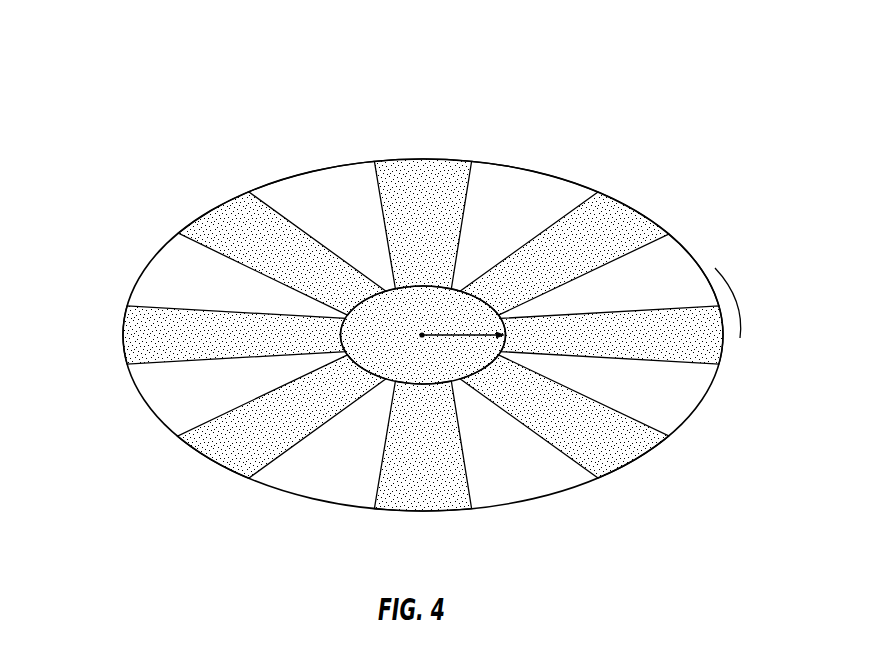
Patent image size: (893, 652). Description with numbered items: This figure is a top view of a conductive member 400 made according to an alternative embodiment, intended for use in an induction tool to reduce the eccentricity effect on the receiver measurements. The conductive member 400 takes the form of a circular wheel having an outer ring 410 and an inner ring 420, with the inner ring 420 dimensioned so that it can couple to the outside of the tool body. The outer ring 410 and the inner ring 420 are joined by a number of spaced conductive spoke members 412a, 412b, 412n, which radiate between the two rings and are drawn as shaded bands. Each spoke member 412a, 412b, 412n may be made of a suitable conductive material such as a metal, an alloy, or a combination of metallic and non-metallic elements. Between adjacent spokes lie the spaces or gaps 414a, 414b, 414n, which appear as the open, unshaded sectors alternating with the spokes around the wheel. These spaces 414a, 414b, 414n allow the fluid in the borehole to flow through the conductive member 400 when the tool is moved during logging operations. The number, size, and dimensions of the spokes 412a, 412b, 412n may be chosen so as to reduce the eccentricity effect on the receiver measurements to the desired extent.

The conductive member 400 is at (139, 44).
The outer ring 410 is at (546, 498).
The spoke member 412a is at (397, 170).
The spoke member 412b is at (632, 217).
The spoke member 412n is at (222, 215).
The space 414a is at (547, 180).
The space 414b is at (690, 262).
The space 414n is at (312, 178).
The inner ring 420 is at (345, 357).